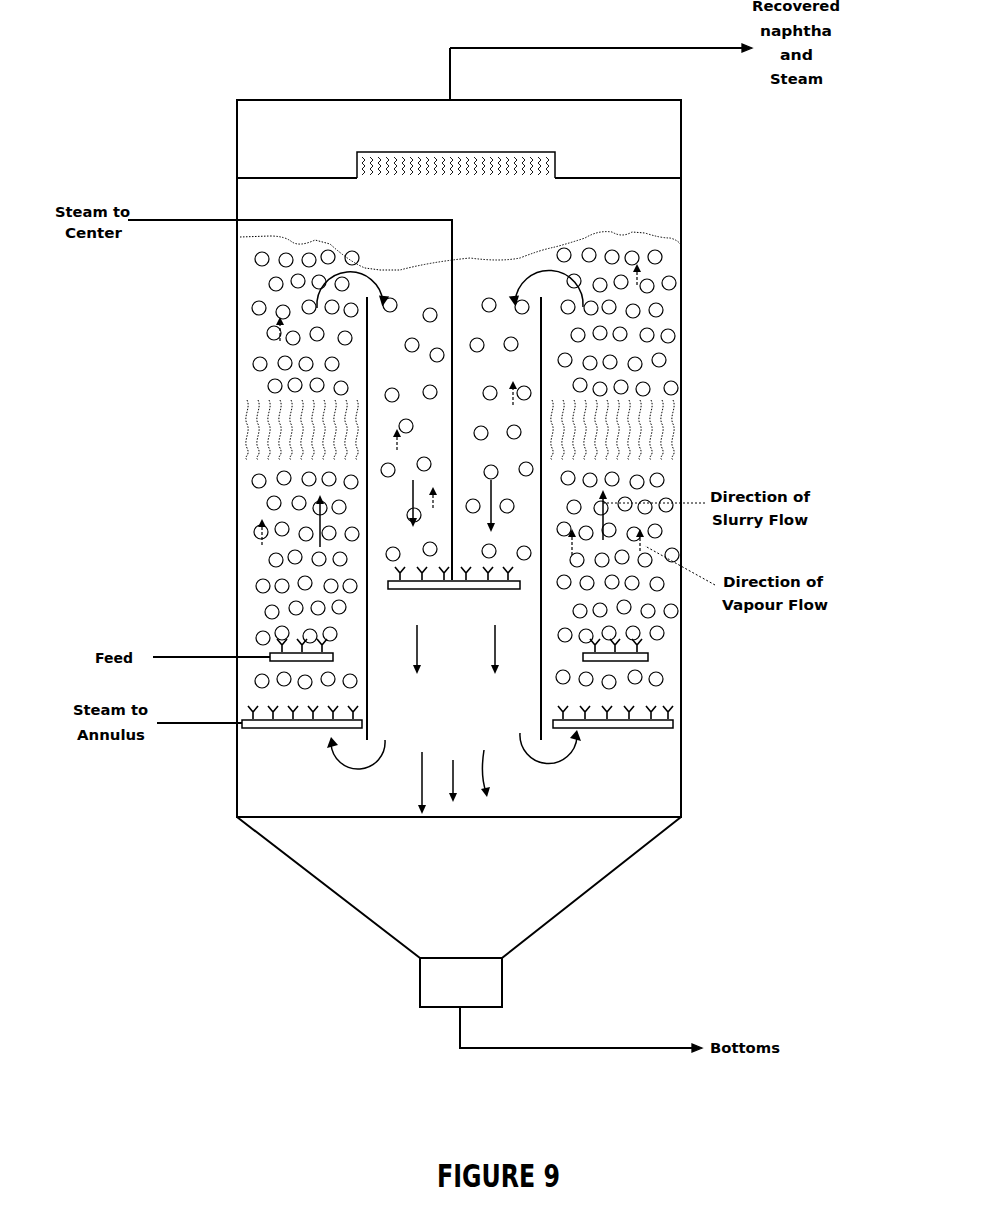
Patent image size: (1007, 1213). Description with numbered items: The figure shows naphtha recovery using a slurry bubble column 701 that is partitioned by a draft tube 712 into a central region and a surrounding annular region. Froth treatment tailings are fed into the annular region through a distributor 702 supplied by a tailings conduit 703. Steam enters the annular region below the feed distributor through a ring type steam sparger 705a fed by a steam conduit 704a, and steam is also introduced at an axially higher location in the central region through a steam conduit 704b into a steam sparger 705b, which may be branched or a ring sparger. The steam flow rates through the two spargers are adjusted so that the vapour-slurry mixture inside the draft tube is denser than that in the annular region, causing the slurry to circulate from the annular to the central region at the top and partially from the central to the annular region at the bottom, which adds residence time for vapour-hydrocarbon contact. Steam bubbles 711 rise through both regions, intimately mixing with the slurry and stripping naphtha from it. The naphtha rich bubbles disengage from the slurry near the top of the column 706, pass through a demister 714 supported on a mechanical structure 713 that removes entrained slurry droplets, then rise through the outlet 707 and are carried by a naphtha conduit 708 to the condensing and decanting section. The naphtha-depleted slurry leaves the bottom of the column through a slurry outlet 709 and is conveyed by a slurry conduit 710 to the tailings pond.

The slurry bubble column 701 is at (683, 222).
The distributor 702 is at (270, 655).
The tailings conduit 703 is at (180, 652).
The steam conduit 704a is at (186, 720).
The steam conduit 704b is at (178, 219).
The ring type steam sparger 705a is at (258, 718).
The steam sparger 705b is at (485, 592).
The top of the column 706 is at (460, 235).
The outlet 707 is at (447, 98).
The naphtha conduit 708 is at (573, 46).
The slurry outlet 709 is at (505, 980).
The slurry conduit 710 is at (555, 1048).
The steam bubbles 711 is at (250, 372).
The draft tube 712 is at (367, 407).
The mechanical structure 713 is at (623, 178).
The demister 714 is at (503, 155).